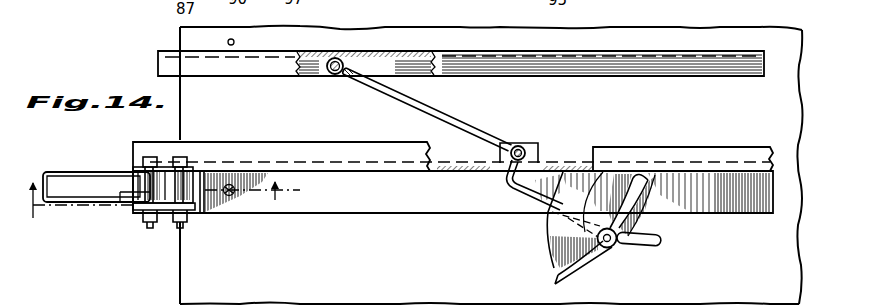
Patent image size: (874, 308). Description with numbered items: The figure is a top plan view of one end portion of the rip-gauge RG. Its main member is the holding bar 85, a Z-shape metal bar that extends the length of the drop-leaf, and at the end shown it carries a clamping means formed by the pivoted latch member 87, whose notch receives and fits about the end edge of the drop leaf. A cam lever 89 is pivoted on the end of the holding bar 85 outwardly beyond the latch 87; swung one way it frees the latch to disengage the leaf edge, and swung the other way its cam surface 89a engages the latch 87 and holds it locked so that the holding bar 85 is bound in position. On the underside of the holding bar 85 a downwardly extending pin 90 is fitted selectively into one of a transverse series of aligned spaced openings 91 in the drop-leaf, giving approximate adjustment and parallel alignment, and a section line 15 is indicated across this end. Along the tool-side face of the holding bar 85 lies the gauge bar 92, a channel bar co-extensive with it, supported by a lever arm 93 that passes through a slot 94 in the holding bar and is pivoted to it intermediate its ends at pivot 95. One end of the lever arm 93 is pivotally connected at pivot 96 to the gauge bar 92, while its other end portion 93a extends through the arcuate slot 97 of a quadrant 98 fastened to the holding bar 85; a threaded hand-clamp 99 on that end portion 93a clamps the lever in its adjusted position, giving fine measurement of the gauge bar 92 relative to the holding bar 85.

The section line 15- 15 is at (163, 212).
The holding bar 85 is at (730, 178).
The pivoted latch member 87 is at (201, 170).
The cam lever 89 is at (80, 176).
The cam surface 89a is at (150, 180).
The pins 90 is at (234, 195).
The openings 91 is at (235, 42).
The gauge bar 92 is at (628, 78).
The lever arm 93 is at (466, 128).
The end portion of lever 93a is at (615, 245).
The slot 94 is at (504, 162).
The pivot 95 is at (520, 145).
The pivot 96 is at (335, 76).
The arcuate slot 97 is at (641, 188).
The quadrant 98 is at (549, 252).
The threaded hand-clamp 99 is at (665, 239).
The rip-gauge RG is at (672, 42).